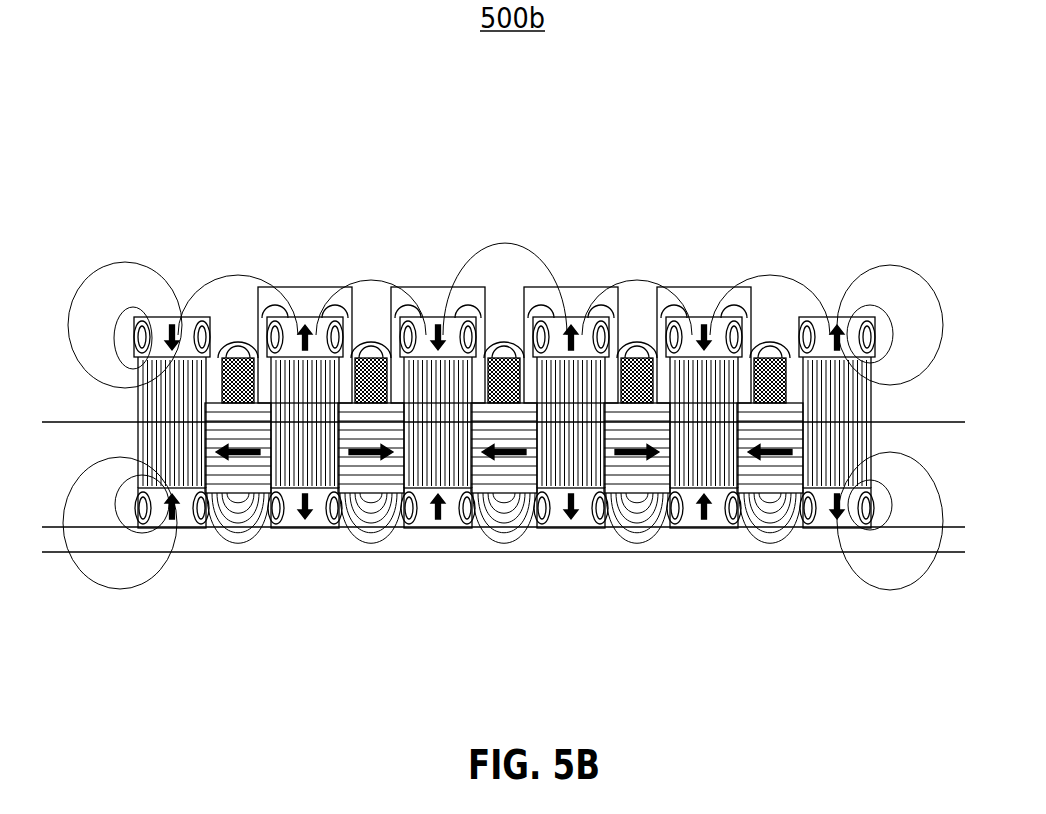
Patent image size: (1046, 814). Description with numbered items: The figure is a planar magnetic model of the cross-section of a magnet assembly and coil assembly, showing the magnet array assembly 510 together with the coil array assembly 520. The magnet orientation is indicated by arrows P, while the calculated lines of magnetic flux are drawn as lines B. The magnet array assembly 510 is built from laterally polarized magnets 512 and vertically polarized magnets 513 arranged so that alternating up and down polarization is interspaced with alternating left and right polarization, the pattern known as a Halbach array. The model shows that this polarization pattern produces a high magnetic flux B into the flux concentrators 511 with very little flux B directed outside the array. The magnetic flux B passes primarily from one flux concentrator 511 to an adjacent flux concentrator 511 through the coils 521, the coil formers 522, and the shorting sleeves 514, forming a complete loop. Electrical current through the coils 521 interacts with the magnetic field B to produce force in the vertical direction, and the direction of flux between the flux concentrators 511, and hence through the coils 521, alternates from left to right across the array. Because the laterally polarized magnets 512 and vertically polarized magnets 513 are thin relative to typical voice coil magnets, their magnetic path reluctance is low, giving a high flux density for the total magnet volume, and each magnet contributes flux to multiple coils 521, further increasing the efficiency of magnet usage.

The magnet array assembly 510 is at (503, 543).
The flux concentrator 511 is at (333, 480).
The laterally polarized magnet 512 is at (508, 497).
The vertically polarized magnet 513 is at (290, 326).
The shorting sleeve 514 is at (205, 334).
The coil array assembly 520 is at (601, 290).
The coil 521 is at (760, 365).
The coil former 522 is at (695, 300).
The lines of magnetic flux B is at (543, 262).
The magnet polarization arrows P is at (833, 520).